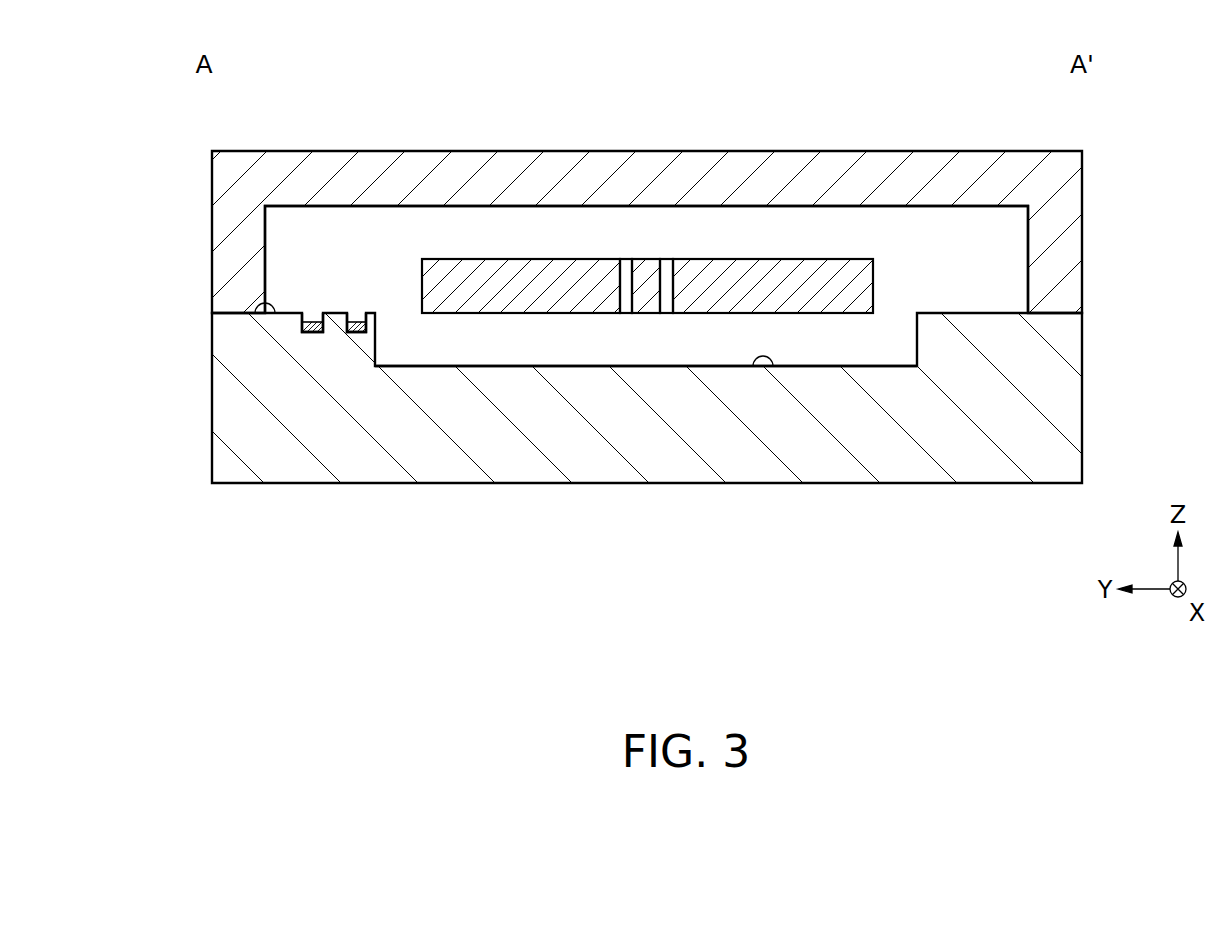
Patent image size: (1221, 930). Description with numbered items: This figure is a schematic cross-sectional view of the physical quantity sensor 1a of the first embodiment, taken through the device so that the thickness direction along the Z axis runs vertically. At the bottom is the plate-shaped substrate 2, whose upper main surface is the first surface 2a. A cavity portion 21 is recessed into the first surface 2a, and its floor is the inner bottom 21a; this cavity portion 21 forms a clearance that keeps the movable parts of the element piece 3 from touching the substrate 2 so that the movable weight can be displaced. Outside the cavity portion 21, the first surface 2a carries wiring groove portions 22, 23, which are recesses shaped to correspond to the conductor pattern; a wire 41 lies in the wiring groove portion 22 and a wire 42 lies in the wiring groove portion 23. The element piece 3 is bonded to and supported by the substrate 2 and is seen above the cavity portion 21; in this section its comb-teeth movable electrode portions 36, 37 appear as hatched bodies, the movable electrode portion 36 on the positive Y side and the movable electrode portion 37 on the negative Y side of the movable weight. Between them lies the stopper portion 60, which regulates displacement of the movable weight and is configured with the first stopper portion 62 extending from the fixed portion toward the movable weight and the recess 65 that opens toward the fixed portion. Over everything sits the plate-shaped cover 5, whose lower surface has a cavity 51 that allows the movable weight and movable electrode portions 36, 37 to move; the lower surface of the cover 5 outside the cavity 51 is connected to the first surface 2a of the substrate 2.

The physical quantity sensor 1a is at (870, 56).
The substrate 2 is at (1082, 402).
The first surface 2a is at (255, 315).
The element piece 3 is at (1006, 253).
The cover 5 is at (882, 151).
The cavity 51 is at (963, 225).
The cavity portion 21 is at (645, 352).
The inner bottom 21a is at (753, 360).
The wiring groove portion 22 is at (355, 313).
The wiring groove portion 23 is at (310, 313).
The movable electrode portion 36 is at (510, 273).
The movable electrode portion 37 is at (785, 272).
The wire 41 is at (355, 333).
The wire 42 is at (308, 333).
The stopper portion 60 is at (645, 177).
The first stopper portion 62 is at (648, 272).
The recess 65 is at (627, 272).